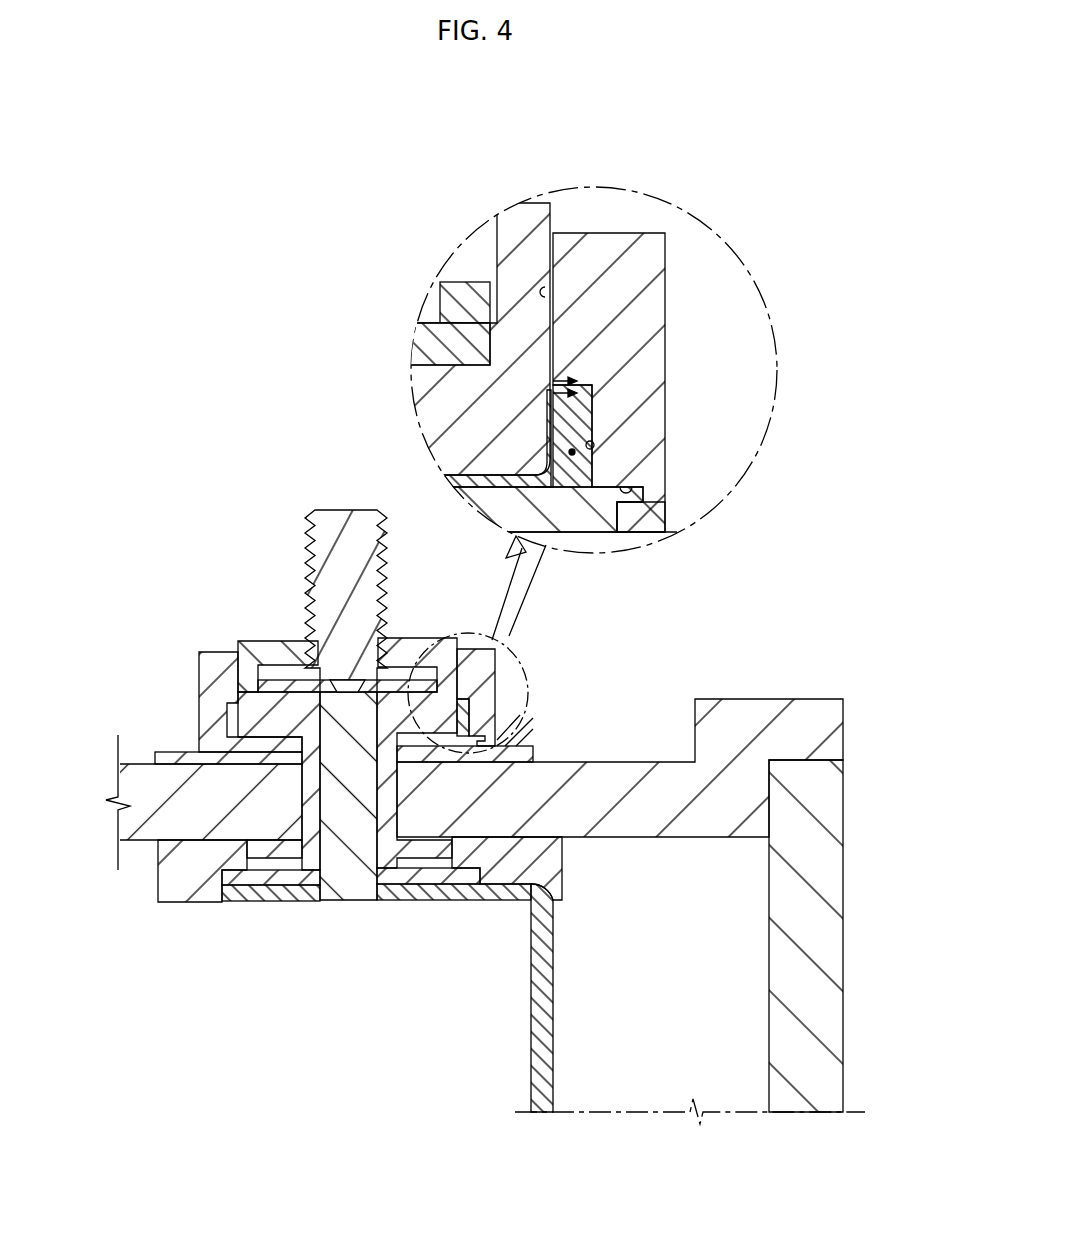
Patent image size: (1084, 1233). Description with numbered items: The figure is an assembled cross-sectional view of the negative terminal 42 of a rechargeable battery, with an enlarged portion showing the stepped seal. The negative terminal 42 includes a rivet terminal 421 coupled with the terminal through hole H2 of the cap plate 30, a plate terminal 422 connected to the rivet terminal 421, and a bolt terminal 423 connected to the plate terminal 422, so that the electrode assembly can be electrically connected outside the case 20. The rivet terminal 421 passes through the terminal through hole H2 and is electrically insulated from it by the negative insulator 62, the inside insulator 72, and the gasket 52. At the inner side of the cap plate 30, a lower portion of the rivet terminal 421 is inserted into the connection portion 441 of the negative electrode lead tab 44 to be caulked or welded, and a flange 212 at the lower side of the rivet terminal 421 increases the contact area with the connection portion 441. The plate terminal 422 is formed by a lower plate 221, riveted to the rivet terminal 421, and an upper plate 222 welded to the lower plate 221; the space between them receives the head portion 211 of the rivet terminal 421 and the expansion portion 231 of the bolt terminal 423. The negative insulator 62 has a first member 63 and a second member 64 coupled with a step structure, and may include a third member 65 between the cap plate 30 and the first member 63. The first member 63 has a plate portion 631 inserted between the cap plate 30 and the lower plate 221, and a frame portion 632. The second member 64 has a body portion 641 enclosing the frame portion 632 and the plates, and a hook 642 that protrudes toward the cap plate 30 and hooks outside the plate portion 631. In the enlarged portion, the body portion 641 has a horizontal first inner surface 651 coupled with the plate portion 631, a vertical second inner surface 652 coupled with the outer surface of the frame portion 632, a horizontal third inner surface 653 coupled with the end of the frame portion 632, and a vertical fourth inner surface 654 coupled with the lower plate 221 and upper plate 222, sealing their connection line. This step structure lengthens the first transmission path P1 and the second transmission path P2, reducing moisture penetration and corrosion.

The case 20 is at (776, 970).
The cap plate 30 is at (688, 820).
The negative terminal 42 is at (308, 692).
The rivet terminal 421 is at (335, 901).
The plate terminal 422 is at (237, 701).
The bolt terminal 423 is at (386, 518).
The lower plate 221 is at (257, 707).
The upper plate 222 is at (270, 648).
The head portion 211 is at (438, 660).
The flange 212 is at (244, 902).
The expansion portion 231 is at (425, 686).
The negative electrode lead tab 44 is at (548, 995).
The connection portion 441 is at (397, 893).
The inside insulator 72 is at (551, 863).
The gasket 52 is at (435, 882).
The negative insulator 62 is at (522, 697).
The first member 63 is at (490, 721).
The second member 64 is at (503, 676).
The third member 65 is at (497, 743).
The plate portion 631 is at (548, 522).
The frame portion 632 is at (572, 455).
The body portion 641 is at (655, 338).
The hook 642 is at (660, 520).
The first inner surface 651 is at (638, 490).
The second inner surface 652 is at (592, 450).
The third inner surface 653 is at (590, 397).
The fourth inner surface 654 is at (557, 307).
The terminal through hole H2 is at (275, 870).
The first transmission path P1 is at (470, 474).
The second transmission path P2 is at (520, 298).